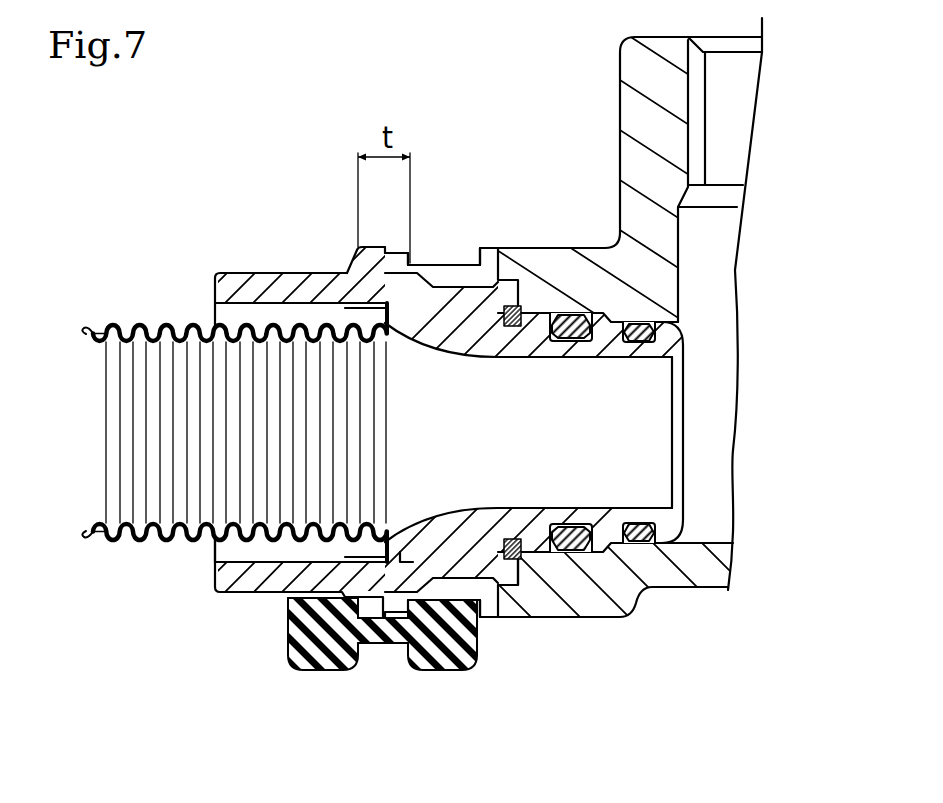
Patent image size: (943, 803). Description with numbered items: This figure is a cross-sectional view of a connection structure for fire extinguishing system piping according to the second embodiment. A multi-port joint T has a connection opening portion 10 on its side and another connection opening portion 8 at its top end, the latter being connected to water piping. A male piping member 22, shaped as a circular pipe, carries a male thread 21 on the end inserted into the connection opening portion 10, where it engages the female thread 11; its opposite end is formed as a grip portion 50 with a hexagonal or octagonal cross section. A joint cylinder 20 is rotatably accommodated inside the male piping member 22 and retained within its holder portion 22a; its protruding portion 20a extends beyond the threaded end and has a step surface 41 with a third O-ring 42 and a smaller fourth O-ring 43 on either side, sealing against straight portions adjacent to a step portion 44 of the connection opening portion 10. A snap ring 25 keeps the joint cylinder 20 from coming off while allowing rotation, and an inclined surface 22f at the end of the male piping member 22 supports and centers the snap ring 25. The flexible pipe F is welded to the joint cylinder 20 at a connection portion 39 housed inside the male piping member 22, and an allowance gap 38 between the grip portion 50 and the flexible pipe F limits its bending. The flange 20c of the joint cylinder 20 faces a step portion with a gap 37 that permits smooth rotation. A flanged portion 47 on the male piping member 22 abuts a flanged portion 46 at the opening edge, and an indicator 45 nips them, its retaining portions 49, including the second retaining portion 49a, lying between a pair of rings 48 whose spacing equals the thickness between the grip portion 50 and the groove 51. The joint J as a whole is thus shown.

The connection opening portion 8 is at (732, 87).
The connection opening portion 10 is at (640, 401).
The female thread 11 is at (462, 582).
The joint cylinder 20 is at (503, 360).
The protruding portion 20a is at (672, 523).
The flange 20c is at (345, 308).
The male thread 21 is at (441, 522).
The male piping member 22 is at (215, 283).
The holder portion 22a is at (443, 305).
The inclined surface 22f is at (480, 548).
The snap ring 25 is at (512, 330).
The gap 37 is at (485, 585).
The allowance gap 38 is at (233, 548).
The connection portion 39 is at (370, 545).
The step surface 41 is at (612, 313).
The third O-ring 42 is at (568, 340).
The fourth O-ring 43 is at (634, 342).
The step portion 44 is at (600, 495).
The indicator 45 is at (365, 584).
The flanged portion 46 is at (412, 263).
The flanged portion 47 is at (358, 262).
The rings 48 is at (293, 633).
The retaining portions 49 is at (390, 685).
The second retaining portion 49a is at (382, 640).
The grip portion 50 is at (289, 413).
The groove 51 is at (453, 267).
The multi-port joint T is at (630, 100).
The flexible pipe F is at (135, 330).
The joint J is at (130, 538).